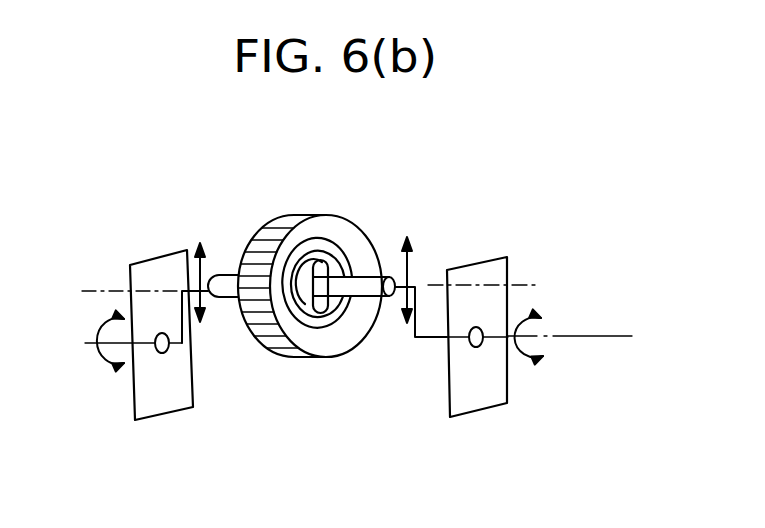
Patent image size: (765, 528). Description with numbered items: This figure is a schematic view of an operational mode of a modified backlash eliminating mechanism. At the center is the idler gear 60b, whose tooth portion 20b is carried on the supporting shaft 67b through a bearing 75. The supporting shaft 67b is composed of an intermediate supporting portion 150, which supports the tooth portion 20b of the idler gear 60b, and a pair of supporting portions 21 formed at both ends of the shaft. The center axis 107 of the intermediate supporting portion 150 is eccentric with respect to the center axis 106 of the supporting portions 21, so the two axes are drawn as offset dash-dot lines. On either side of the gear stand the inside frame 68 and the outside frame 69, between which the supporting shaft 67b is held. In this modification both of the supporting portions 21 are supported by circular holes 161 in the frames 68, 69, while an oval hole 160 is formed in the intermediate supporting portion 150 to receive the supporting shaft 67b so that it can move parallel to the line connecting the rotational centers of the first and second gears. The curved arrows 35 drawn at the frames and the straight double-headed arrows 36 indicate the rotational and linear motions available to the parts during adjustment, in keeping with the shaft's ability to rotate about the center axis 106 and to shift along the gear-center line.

The inside frame 68 is at (152, 263).
The oval hole 160 is at (293, 263).
The bearing 75 is at (309, 258).
The idler gear 60b is at (357, 209).
The supporting shaft 67b is at (370, 285).
The outside frame 69 is at (490, 265).
The center axis of intermediate supporting portion 107 is at (533, 283).
The center axis of supporting portions 106 is at (612, 333).
The rotation direction arrow 35 is at (113, 368).
The vertical movement arrow 36 is at (211, 300).
The circular holes 161 is at (166, 352).
The intermediate supporting portion 150 is at (307, 325).
The tooth portion 20b is at (344, 353).
The supporting portions 21 is at (437, 340).